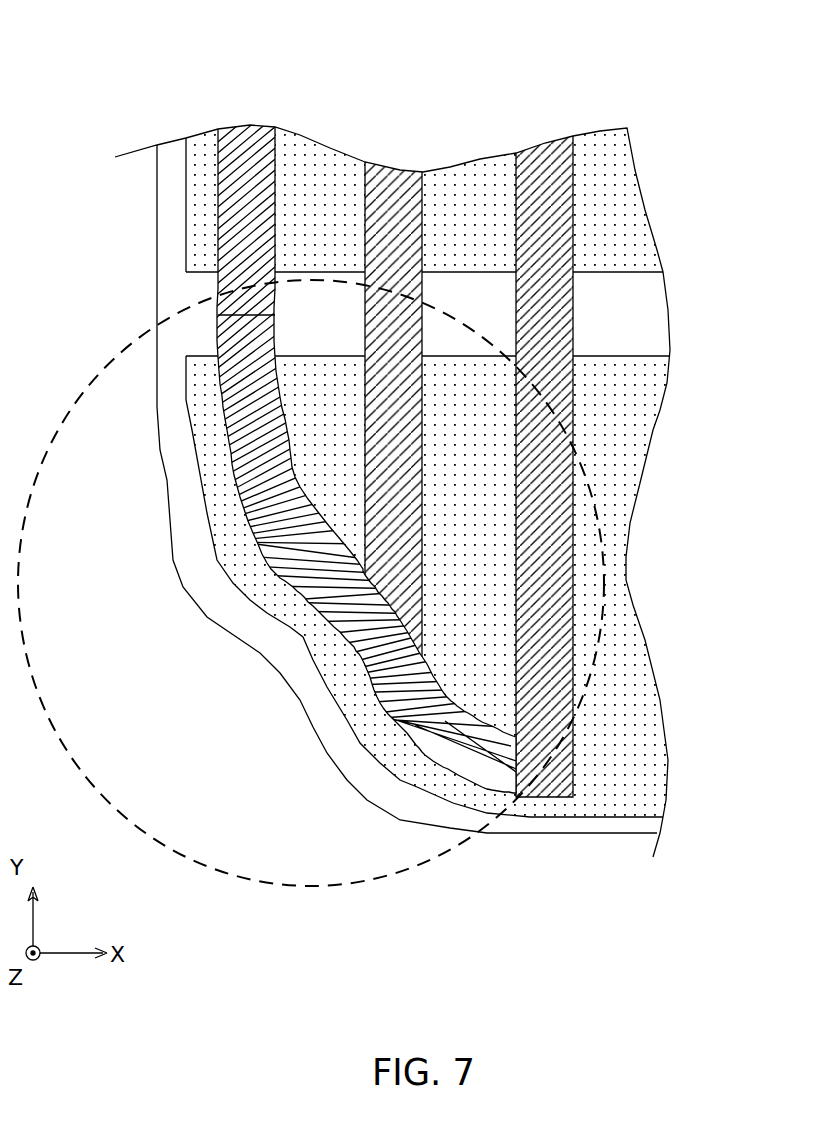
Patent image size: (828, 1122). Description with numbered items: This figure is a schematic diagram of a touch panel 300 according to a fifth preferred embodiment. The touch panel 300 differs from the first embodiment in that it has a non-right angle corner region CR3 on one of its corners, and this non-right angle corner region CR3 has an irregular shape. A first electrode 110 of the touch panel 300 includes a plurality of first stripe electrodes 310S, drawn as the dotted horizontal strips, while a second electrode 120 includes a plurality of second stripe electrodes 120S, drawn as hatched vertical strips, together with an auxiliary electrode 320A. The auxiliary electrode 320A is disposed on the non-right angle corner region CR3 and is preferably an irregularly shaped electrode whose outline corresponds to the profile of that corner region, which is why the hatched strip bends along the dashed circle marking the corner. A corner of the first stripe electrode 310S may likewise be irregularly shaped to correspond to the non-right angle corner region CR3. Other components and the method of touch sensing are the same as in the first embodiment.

The touch panel 300 is at (391, 446).
The first electrode 110 is at (446, 471).
The first stripe electrode 310S is at (446, 471).
The second electrode 120 is at (352, 437).
The second stripe electrode 120S is at (352, 437).
The auxiliary electrode 320A is at (305, 630).
The non-right angle corner region CR3 is at (185, 860).